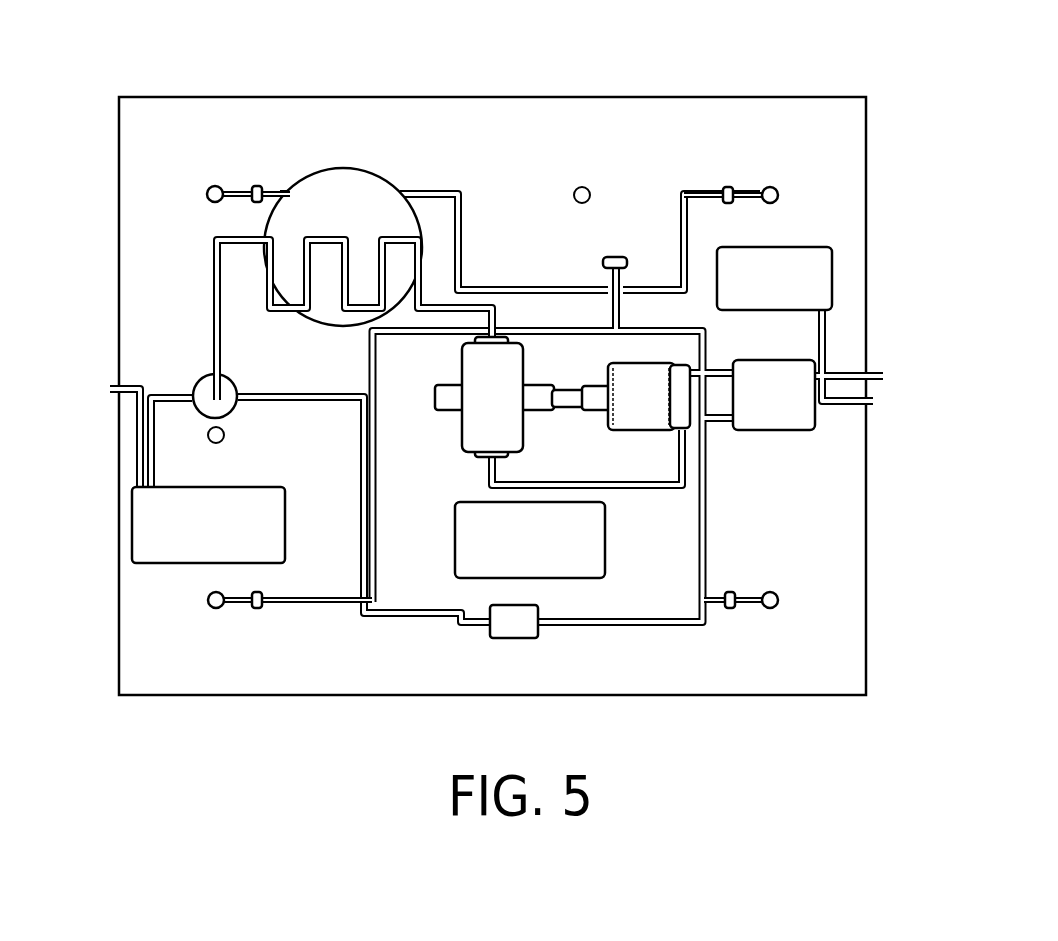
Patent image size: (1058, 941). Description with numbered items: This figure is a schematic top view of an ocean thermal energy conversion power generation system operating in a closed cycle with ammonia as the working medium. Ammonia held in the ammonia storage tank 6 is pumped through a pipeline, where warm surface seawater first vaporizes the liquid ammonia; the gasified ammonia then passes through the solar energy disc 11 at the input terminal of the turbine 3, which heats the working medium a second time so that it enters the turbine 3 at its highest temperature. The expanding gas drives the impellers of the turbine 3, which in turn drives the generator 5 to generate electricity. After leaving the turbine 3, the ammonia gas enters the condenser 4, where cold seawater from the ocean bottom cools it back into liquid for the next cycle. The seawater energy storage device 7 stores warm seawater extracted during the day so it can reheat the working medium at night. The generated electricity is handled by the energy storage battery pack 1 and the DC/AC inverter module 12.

The energy storage battery pack 1 is at (585, 555).
The turbine 3 is at (493, 360).
The condenser 4 is at (810, 428).
The generator 5 is at (660, 387).
The ammonia storage tank 6 is at (530, 630).
The seawater energy storage device 7 is at (833, 273).
The solar energy disc 11 is at (330, 197).
The DC/AC inverter module 12 is at (255, 190).